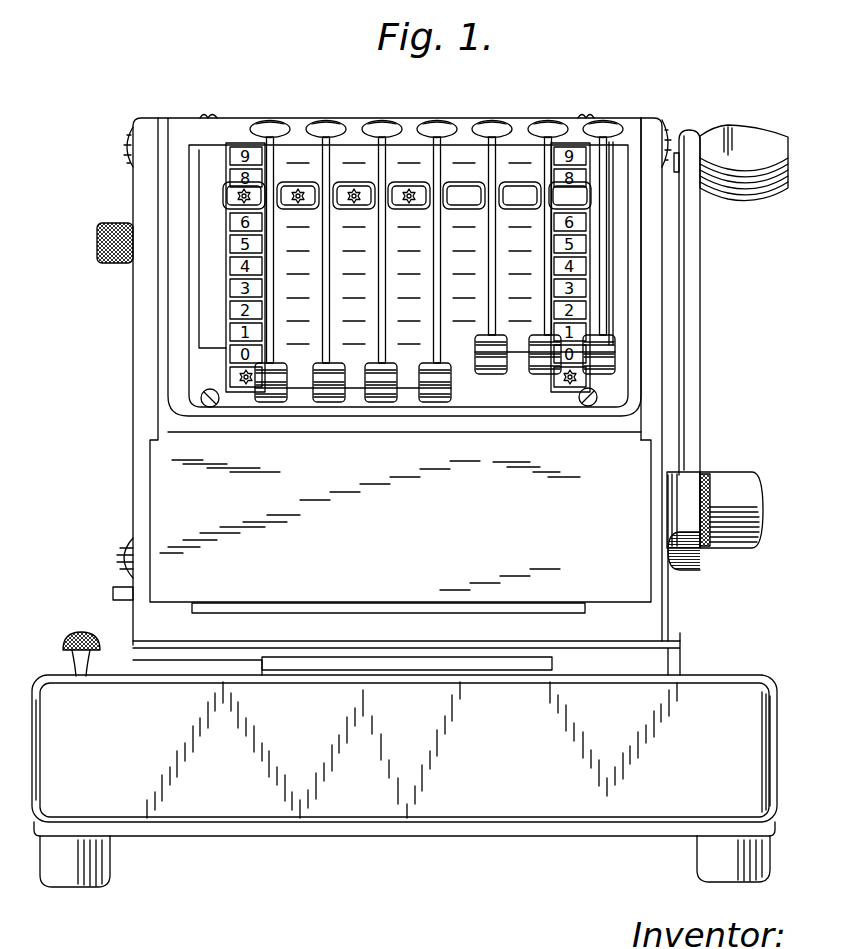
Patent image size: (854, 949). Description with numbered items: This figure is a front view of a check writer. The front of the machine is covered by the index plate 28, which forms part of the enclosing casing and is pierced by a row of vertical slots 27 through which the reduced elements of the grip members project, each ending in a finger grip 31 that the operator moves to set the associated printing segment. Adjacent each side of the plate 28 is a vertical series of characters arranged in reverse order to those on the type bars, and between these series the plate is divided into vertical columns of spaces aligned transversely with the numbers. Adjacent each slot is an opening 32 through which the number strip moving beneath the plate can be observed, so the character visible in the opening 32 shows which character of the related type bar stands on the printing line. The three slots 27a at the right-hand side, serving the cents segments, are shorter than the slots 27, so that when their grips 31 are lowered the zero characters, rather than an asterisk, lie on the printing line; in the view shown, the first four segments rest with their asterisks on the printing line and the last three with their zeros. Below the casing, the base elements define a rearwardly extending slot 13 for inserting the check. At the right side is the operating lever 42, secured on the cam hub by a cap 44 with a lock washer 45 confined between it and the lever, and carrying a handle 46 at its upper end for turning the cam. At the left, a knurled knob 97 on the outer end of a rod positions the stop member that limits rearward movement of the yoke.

The slot 13 is at (404, 751).
The slot 27 is at (322, 162).
The slots 27a is at (597, 152).
The index plate 28 is at (409, 122).
The grip 31 is at (282, 403).
The opening 32 is at (230, 196).
The operating lever 42 is at (696, 366).
The cap 44 is at (733, 480).
The lock washer 45 is at (706, 548).
The handle 46 is at (765, 140).
The knurled knob 97 is at (97, 247).